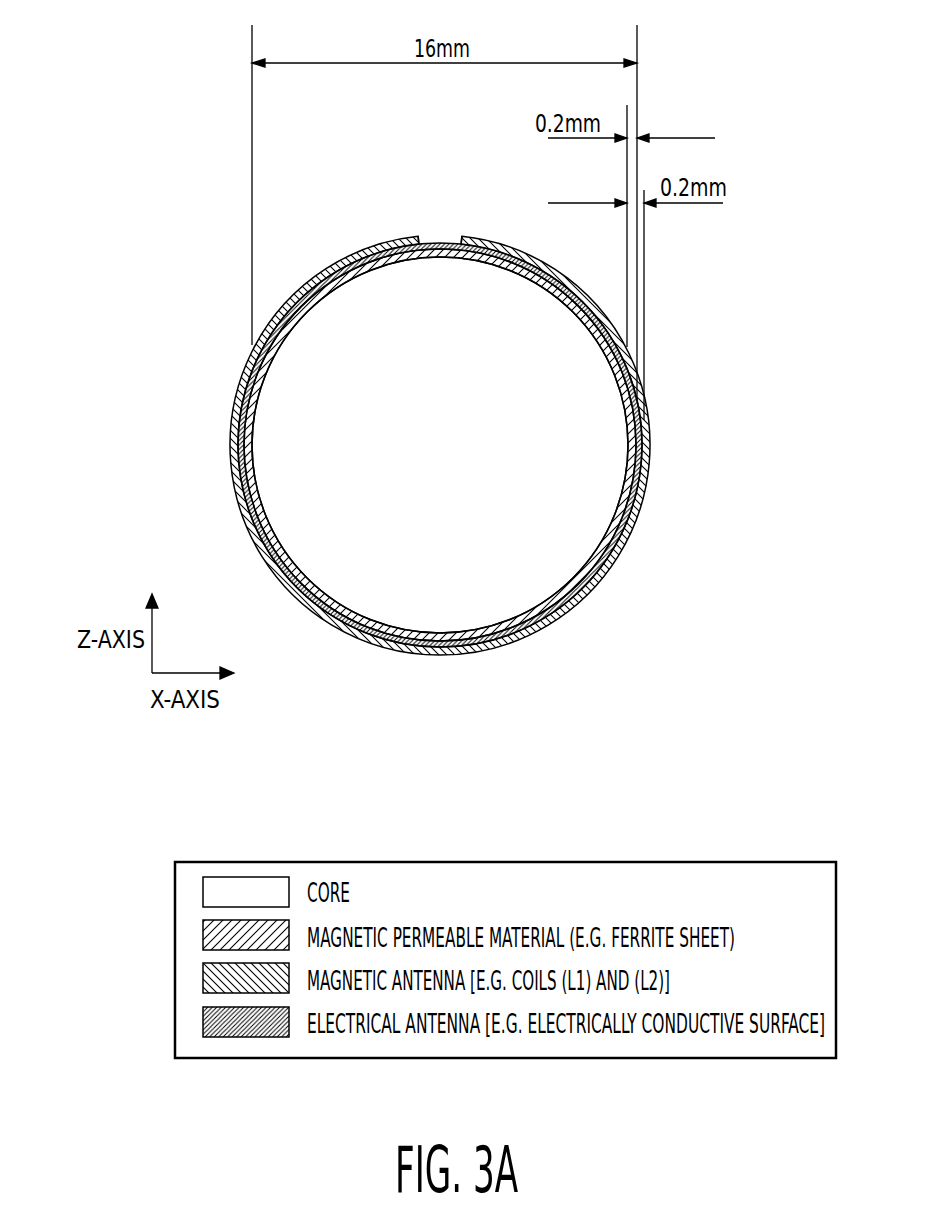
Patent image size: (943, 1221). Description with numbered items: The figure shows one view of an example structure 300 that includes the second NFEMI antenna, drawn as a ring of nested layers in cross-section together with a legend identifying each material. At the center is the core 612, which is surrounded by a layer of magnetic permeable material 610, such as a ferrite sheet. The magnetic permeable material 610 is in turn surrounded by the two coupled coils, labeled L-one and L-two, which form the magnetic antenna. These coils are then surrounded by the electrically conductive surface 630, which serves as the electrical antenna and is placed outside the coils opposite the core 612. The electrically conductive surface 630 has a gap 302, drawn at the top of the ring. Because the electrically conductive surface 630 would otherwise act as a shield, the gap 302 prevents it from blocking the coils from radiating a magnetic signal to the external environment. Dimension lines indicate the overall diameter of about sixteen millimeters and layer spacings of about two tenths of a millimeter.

The structure 300 is at (145, 82).
The gap 302 is at (441, 230).
The magnetic permeable material 610 is at (358, 250).
The core 612 is at (458, 456).
The electrically conductive surface 630 is at (232, 460).